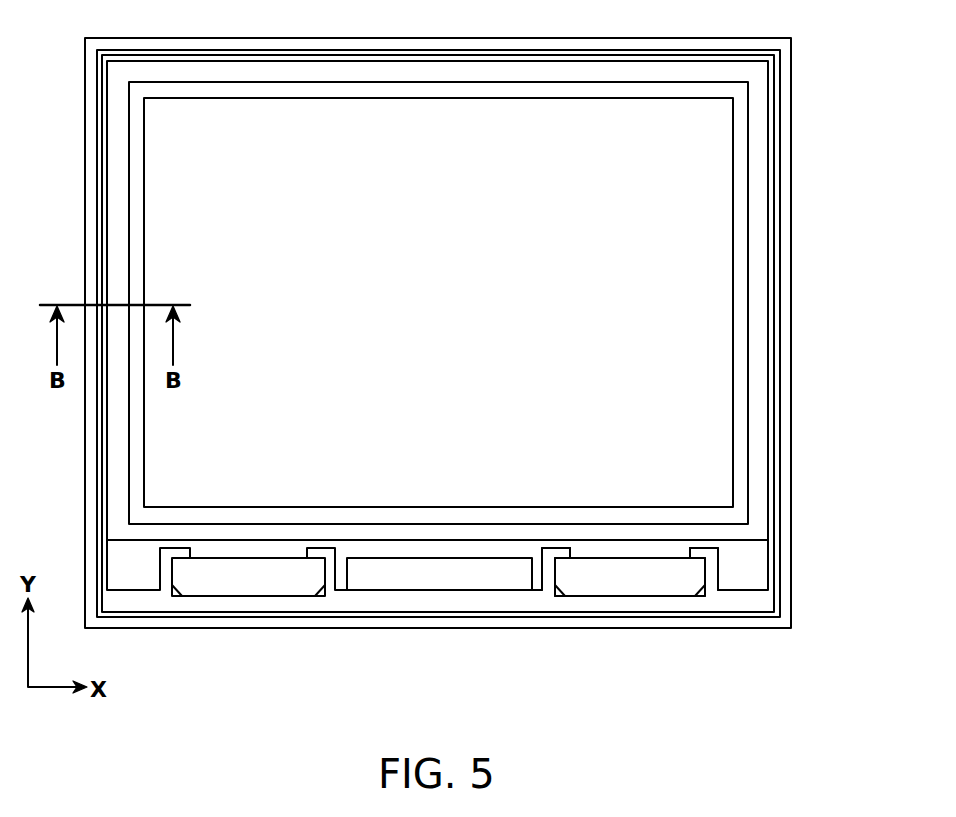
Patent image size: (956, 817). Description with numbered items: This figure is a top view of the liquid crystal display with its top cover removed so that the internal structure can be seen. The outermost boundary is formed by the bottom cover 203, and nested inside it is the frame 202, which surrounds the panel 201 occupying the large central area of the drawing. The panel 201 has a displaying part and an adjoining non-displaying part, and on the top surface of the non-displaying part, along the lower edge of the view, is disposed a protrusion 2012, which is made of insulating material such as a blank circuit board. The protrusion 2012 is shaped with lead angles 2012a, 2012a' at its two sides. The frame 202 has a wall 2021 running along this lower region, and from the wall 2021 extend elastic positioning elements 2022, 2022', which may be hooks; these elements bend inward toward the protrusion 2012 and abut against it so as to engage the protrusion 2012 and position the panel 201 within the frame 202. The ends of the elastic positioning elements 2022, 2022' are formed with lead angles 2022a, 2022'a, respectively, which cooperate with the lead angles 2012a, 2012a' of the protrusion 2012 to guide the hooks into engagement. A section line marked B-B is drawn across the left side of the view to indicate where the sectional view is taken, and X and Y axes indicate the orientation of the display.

The panel 201 is at (713, 390).
The frame 202 is at (758, 302).
The bottom cover 203 is at (785, 213).
The wall 2021 is at (440, 592).
The protrusion 2012 is at (632, 597).
The lead angle 2012a is at (703, 616).
The lead angle 2012a' is at (559, 616).
The elastic positioning element 2022 is at (747, 627).
The elastic positioning element 2022' is at (516, 627).
The lead angle 2022a is at (693, 550).
The lead angle 2022'a is at (571, 512).